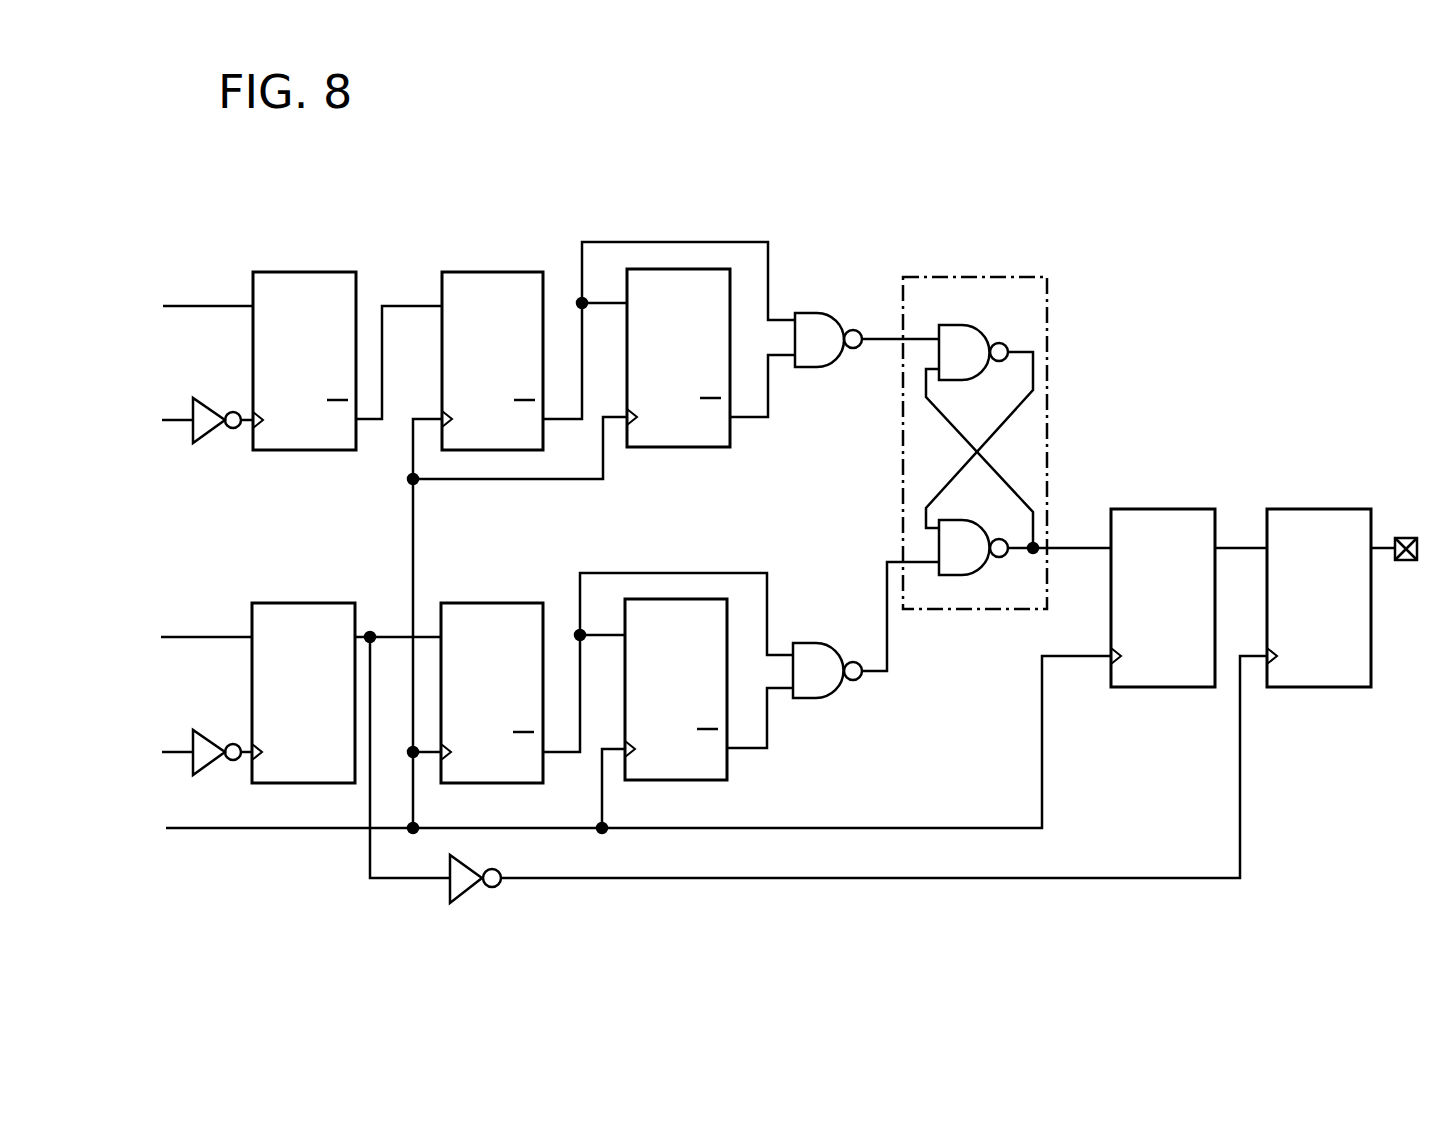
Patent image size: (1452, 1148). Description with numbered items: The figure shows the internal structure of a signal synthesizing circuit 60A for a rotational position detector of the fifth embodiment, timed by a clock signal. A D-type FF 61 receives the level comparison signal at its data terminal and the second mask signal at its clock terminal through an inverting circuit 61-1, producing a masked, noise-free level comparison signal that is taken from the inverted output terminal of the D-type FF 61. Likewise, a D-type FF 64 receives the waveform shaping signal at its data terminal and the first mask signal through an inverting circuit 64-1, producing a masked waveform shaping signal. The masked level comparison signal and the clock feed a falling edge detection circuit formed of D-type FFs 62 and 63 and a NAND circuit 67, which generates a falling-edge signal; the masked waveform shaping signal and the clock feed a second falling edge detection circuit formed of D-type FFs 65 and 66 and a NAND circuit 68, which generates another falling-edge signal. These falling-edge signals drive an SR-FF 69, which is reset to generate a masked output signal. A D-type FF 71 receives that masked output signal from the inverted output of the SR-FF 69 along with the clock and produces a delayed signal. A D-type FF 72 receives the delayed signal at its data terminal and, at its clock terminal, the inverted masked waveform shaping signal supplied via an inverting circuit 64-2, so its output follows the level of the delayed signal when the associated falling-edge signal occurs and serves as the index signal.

The signal synthesizing circuit 60A is at (893, 187).
The D-type FF 61 is at (302, 272).
The inverting circuit 61-1 is at (208, 441).
The D-type FF 62 is at (491, 272).
The D-type FF 63 is at (659, 269).
The D-type FF 64 is at (303, 603).
The inverting circuit 64-1 is at (199, 734).
The inverting circuit 64-2 is at (466, 897).
The D-type FF 65 is at (490, 603).
The D-type FF 66 is at (658, 599).
The NAND circuit 67 is at (808, 313).
The NAND circuit 68 is at (808, 643).
The SR-FF 69 is at (976, 277).
The D-type FF 71 is at (1155, 509).
The D-type FF 72 is at (1313, 509).